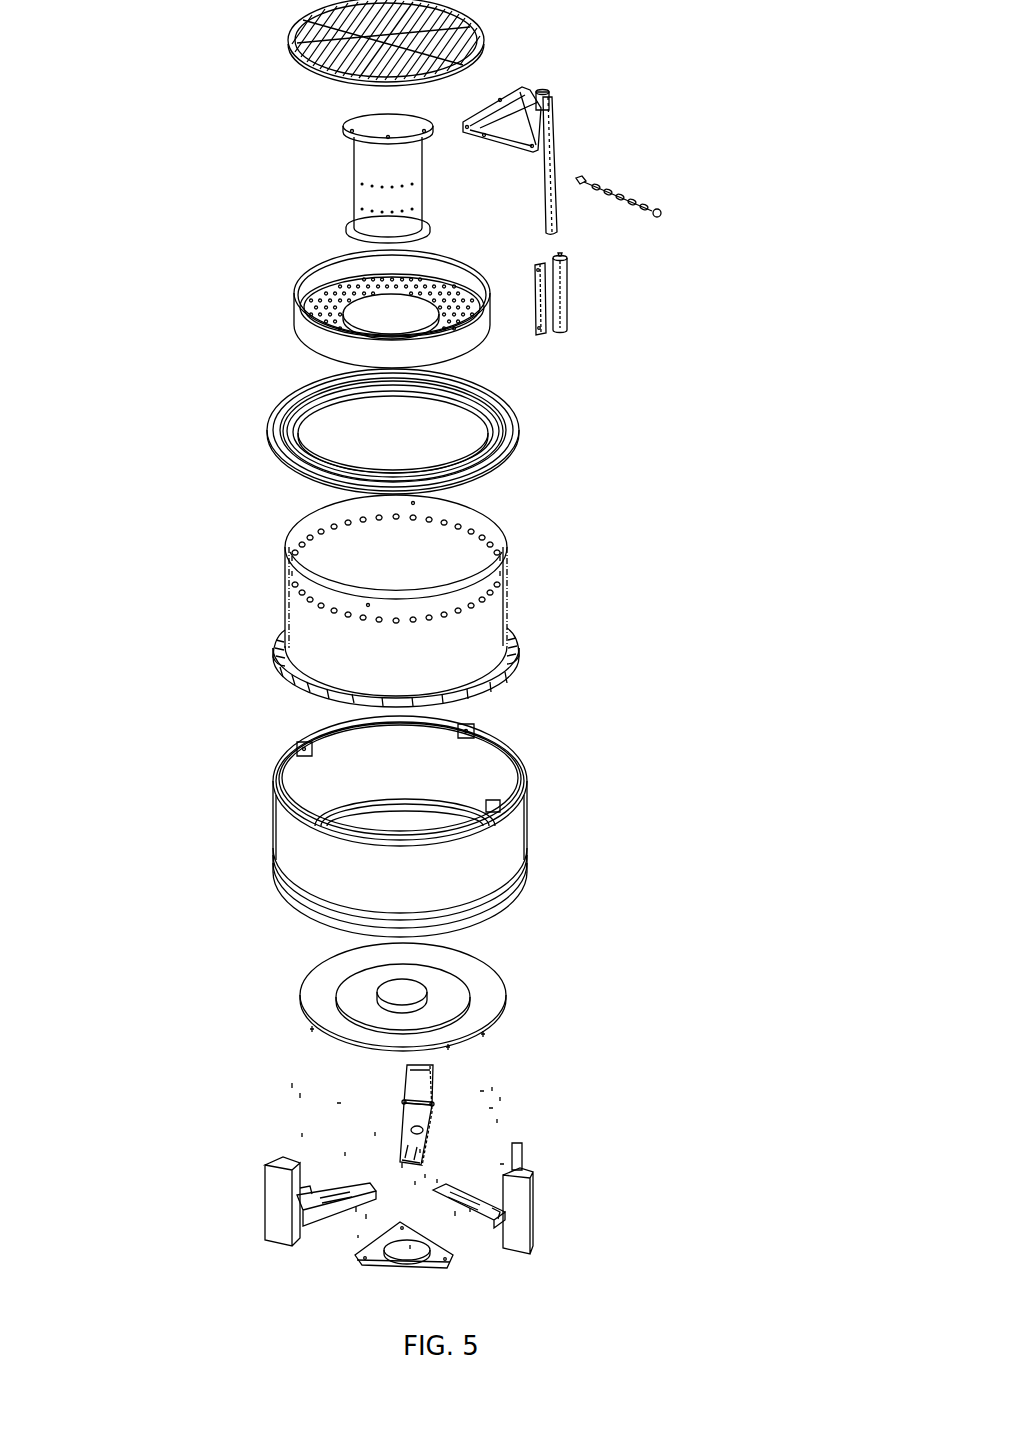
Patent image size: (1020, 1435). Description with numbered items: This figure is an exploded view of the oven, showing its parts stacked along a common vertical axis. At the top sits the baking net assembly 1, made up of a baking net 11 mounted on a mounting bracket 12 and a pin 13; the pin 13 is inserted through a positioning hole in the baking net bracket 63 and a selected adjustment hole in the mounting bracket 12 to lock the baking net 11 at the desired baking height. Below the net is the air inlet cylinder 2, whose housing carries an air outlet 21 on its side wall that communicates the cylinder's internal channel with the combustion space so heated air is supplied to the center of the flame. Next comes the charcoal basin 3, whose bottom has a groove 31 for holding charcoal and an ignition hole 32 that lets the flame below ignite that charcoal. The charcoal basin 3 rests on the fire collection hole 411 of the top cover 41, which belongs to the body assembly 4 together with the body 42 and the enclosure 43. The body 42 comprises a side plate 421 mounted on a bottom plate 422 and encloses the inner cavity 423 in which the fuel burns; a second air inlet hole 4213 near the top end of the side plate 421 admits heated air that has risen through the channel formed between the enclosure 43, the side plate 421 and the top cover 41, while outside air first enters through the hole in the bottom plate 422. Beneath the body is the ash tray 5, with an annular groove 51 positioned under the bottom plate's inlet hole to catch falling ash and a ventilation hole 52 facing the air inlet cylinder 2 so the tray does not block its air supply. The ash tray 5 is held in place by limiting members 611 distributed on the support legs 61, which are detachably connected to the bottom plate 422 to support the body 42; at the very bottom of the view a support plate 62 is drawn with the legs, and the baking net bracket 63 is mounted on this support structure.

The baking net assembly 1 is at (549, 117).
The baking net 11 is at (470, 34).
The mounting bracket 12 is at (556, 125).
The pin 13 is at (658, 199).
The air inlet cylinder 2 is at (317, 178).
The air outlet 21 is at (360, 210).
The charcoal basin 3 is at (392, 317).
The groove 31 is at (480, 320).
The ignition hole 32 is at (320, 298).
The body assembly 4 is at (364, 653).
The top cover 41 is at (414, 431).
The fire collection hole 411 is at (460, 435).
The body 42 is at (404, 601).
The side plate 421 is at (482, 614).
The second air inlet hole 4213 is at (480, 590).
The bottom plate 422 is at (515, 657).
The inner cavity 423 is at (443, 560).
The enclosure 43 is at (339, 826).
The ash tray 5 is at (475, 999).
The annular groove 51 is at (478, 973).
The ventilation hole 52 is at (400, 994).
The support leg 61 is at (400, 1159).
The limiting member 611 is at (405, 1130).
The bottom plate 62 is at (460, 1258).
The baking net bracket 63 is at (548, 298).